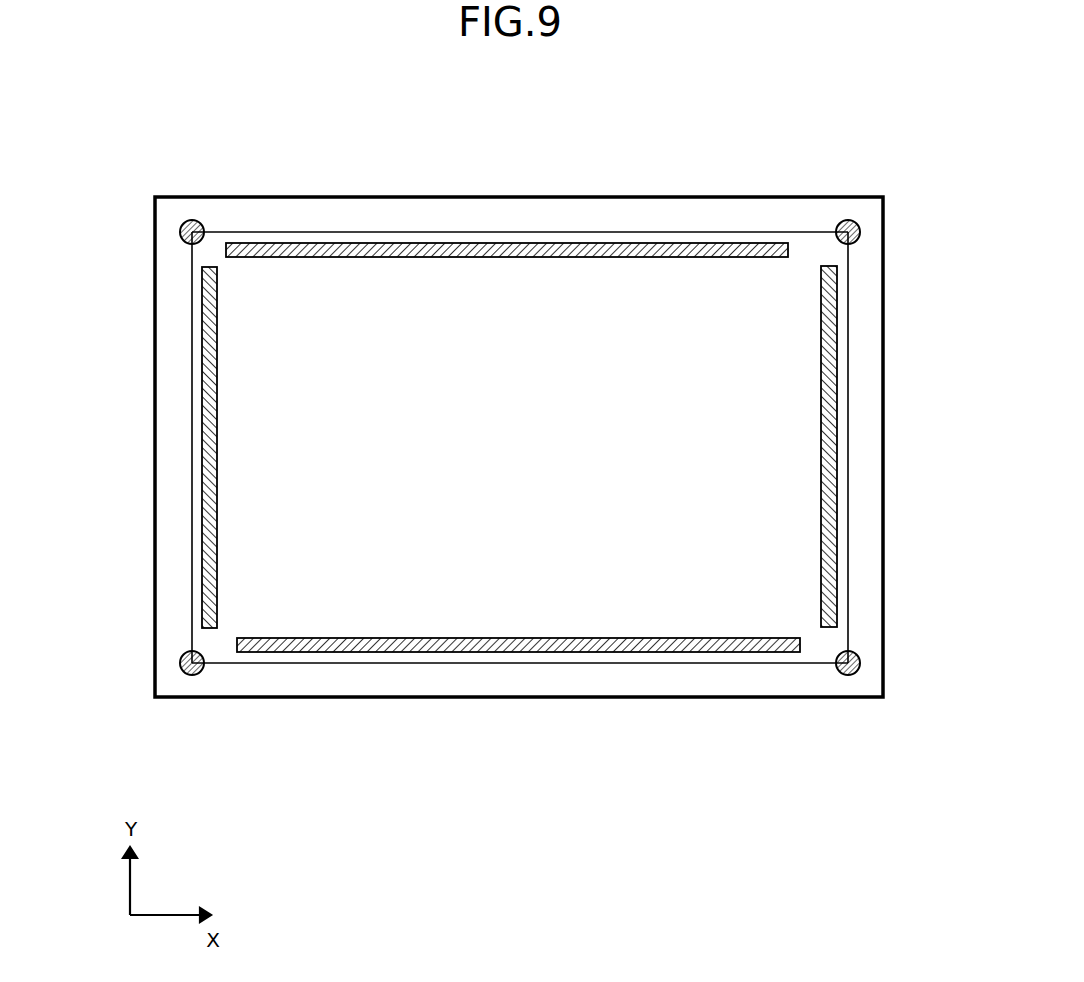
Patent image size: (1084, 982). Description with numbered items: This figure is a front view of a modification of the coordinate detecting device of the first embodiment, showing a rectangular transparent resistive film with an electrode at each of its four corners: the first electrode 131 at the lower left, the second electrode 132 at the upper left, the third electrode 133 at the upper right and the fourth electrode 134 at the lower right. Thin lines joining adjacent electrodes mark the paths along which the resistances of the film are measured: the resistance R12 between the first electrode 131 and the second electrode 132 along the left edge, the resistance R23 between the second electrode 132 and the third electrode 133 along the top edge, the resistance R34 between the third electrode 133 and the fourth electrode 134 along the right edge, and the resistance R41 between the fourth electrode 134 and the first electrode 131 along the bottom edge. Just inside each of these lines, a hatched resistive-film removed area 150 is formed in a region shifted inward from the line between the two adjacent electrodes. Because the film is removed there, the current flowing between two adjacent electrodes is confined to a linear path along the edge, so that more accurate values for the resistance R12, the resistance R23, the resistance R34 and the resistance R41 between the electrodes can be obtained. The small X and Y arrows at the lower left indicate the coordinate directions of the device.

The first electrode 131 is at (183, 672).
The second electrode 132 is at (181, 220).
The third electrode 133 is at (838, 220).
The fourth electrode 134 is at (842, 674).
The resistive-film removed area 150 is at (390, 257).
The resistance between the first electrode and the second electrode R12 is at (192, 470).
The resistance between the second electrode and the third electrode R23 is at (520, 218).
The resistance between the third electrode and the fourth electrode R34 is at (848, 423).
The resistance between the fourth electrode and the first electrode R41 is at (520, 678).